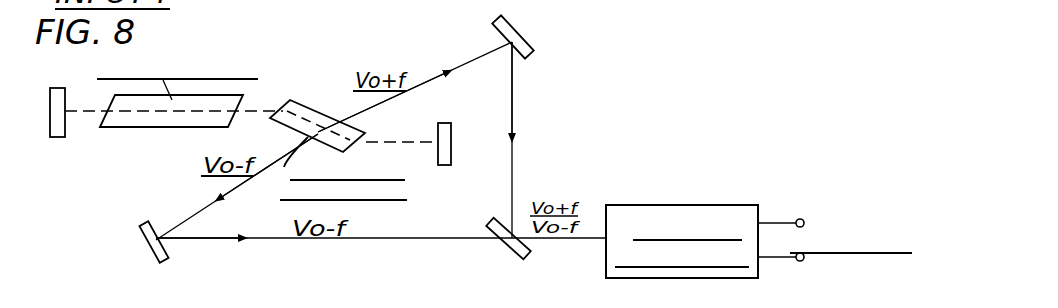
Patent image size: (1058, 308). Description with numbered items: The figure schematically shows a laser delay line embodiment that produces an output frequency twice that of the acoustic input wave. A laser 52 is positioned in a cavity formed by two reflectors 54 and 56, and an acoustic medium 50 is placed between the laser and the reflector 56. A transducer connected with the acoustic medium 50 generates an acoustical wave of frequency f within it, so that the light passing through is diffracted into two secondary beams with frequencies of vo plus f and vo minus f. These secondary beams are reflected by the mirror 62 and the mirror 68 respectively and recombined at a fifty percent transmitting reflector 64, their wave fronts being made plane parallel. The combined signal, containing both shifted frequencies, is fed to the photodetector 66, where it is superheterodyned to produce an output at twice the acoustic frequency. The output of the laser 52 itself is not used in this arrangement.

The acoustic medium 50 is at (310, 86).
The laser 52 is at (140, 126).
The reflector 54 is at (55, 132).
The reflector 56 is at (443, 167).
The mirror 62 is at (517, 33).
The 50 percent transmitting reflector 64 is at (504, 246).
The photodetector 66 is at (607, 272).
The mirror 68 is at (148, 246).